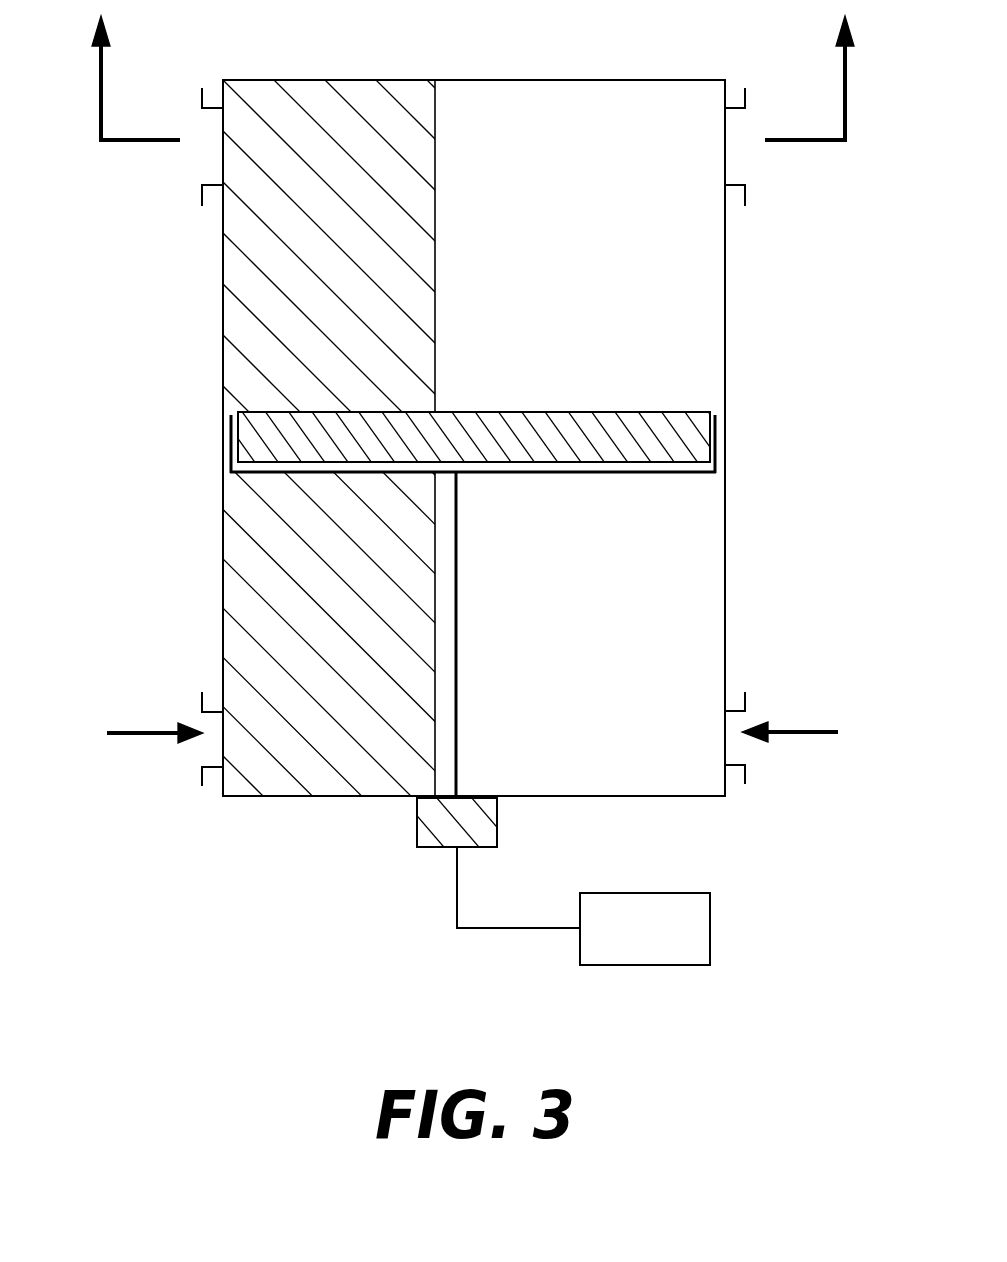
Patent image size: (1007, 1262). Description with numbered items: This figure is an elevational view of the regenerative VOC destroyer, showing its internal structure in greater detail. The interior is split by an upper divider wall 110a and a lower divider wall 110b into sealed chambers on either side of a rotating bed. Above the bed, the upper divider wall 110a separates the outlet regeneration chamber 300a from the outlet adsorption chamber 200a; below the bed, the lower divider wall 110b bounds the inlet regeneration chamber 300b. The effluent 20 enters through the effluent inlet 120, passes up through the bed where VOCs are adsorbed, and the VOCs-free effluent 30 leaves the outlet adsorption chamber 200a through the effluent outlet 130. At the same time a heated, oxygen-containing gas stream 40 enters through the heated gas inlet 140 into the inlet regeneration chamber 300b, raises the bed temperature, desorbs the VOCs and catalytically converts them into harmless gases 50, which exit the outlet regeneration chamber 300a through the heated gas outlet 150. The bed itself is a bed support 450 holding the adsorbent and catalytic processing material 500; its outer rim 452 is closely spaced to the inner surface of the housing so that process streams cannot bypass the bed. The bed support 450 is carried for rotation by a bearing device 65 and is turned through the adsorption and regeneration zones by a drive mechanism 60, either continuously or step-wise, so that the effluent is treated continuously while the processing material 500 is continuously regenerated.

The effluent 20 is at (797, 730).
The VOCs-free effluent 30 is at (843, 72).
The heated, oxygen-containing gas stream 40 is at (130, 733).
The harmless gases 50 is at (103, 80).
The drive mechanism 60 is at (583, 906).
The bearing device 65 is at (497, 802).
The upper divider wall 110a is at (435, 145).
The lower divider wall 110b is at (433, 702).
The effluent inlet 120 is at (745, 773).
The effluent outlet 130 is at (746, 200).
The heated gas inlet 140 is at (198, 758).
The heated gas outlet 150 is at (200, 165).
The outlet adsorption chamber 200a is at (474, 438).
The outlet regeneration chamber 300a is at (388, 245).
The inlet regeneration chamber 300b is at (385, 635).
The bed support 450 is at (688, 490).
The rim 452 is at (718, 437).
The processing material 500 is at (505, 412).